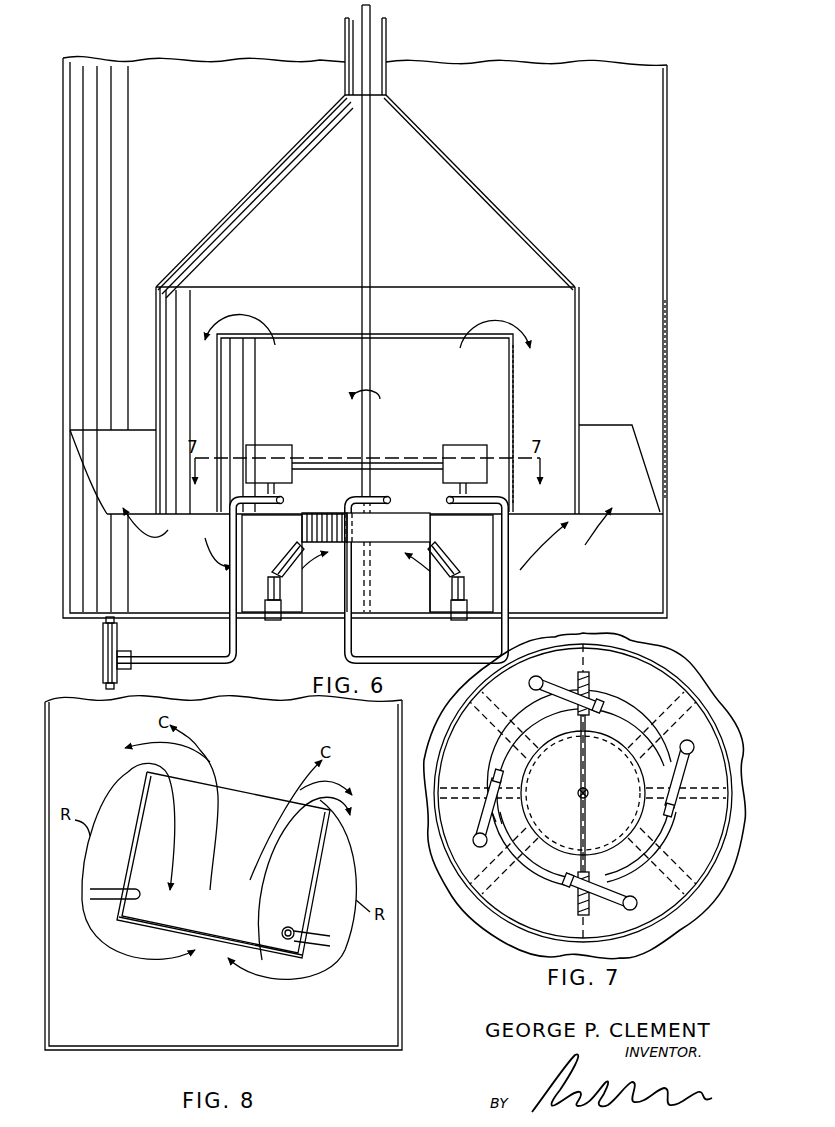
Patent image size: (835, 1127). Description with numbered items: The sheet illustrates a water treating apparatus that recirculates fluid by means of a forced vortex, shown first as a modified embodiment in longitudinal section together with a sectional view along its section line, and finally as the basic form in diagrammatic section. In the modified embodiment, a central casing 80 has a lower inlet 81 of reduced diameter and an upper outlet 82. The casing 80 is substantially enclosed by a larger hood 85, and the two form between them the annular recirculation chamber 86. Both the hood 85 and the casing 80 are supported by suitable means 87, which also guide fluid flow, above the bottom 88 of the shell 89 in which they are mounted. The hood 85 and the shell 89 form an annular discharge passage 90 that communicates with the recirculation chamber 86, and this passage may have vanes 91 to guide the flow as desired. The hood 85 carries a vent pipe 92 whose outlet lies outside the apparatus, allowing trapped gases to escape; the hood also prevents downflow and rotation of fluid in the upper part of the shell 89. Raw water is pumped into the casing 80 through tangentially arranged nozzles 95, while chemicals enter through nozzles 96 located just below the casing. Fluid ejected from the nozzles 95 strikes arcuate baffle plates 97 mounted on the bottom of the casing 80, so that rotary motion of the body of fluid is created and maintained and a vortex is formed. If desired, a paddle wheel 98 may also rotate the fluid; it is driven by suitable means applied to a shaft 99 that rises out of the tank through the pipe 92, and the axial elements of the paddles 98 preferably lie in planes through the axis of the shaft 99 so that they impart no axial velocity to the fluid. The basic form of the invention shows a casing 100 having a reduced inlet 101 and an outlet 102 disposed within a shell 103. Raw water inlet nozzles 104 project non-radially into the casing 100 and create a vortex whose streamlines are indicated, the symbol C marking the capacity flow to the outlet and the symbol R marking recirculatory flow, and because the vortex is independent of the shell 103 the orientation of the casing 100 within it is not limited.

In FIG. 6, the central casing 80 is at (515, 400).
In FIG. 6, the lower inlet 81 is at (360, 544).
In FIG. 6, the upper outlet 82 is at (440, 336).
In FIG. 6, the hood 85 is at (540, 246).
In FIG. 6, the annular recirculation chamber 86 is at (562, 406).
In FIG. 6, the supporting means 87 is at (305, 604).
In FIG. 7, the supporting means 87 is at (588, 663).
In FIG. 6, the bottom of the shell 88 is at (196, 620).
In FIG. 6, the shell 89 is at (668, 415).
In FIG. 6, the annular discharge passage 90 is at (650, 386).
In FIG. 6, the vanes 91 is at (652, 490).
In FIG. 6, the vent pipe 92 is at (378, 47).
In FIG. 6, the tangentially arranged nozzles 95 is at (262, 497).
In FIG. 7, the tangentially arranged nozzles 95 is at (592, 707).
In FIG. 6, the chemical nozzles 96 is at (290, 551).
In FIG. 7, the arcuate baffle plates 97 is at (625, 713).
In FIG. 6, the paddle wheel 98 is at (275, 447).
In FIG. 7, the paddle wheel 98 is at (578, 686).
In FIG. 6, the shaft 99 is at (372, 222).
In FIG. 7, the shaft 99 is at (588, 797).
In FIG. 8, the casing 100 is at (320, 862).
In FIG. 8, the reduced inlet 101 is at (208, 942).
In FIG. 8, the outlet 102 is at (200, 786).
In FIG. 8, the shell 103 is at (72, 1050).
In FIG. 8, the raw water inlet nozzles 104 is at (127, 893).